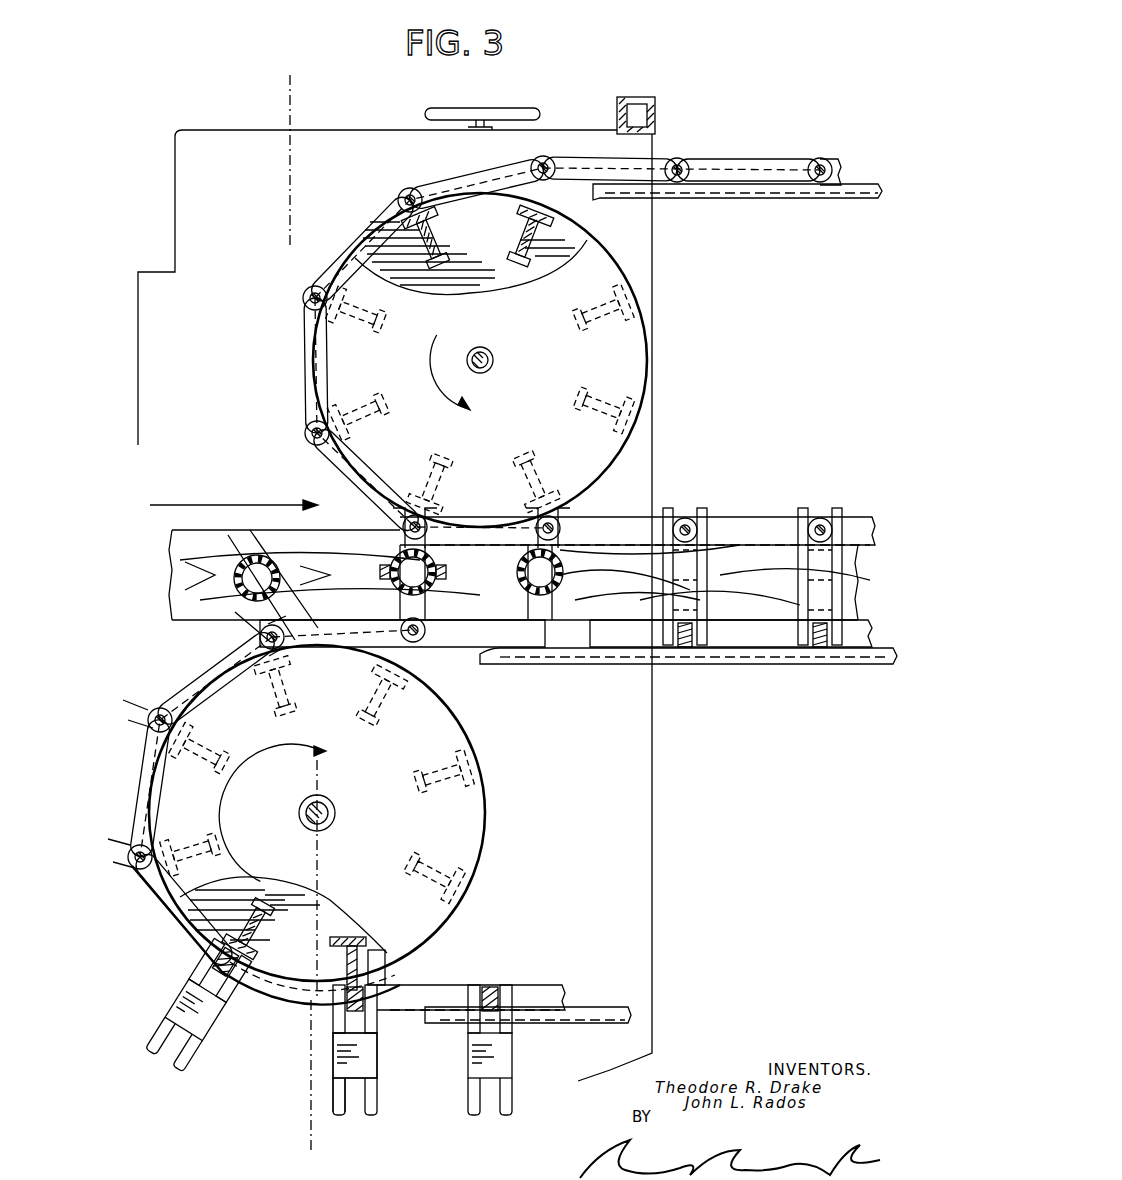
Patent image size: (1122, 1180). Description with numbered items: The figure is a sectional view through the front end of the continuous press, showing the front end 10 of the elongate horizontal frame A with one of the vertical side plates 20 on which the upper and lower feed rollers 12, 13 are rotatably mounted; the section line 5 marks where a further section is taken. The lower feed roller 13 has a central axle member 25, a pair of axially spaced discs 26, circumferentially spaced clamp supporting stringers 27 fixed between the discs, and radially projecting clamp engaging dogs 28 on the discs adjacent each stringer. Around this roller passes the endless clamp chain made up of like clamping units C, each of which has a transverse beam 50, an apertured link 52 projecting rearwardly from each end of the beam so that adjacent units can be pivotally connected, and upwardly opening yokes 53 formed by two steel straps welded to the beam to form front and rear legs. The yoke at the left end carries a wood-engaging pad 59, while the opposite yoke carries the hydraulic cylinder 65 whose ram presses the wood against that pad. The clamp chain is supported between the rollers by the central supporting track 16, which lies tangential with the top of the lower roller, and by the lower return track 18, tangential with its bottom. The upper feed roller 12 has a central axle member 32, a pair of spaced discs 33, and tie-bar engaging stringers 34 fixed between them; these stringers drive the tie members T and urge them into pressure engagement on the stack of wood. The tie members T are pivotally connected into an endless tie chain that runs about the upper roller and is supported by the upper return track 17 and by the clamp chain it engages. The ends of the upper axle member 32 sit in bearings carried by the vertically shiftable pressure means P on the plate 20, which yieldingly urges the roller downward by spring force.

The front end 10 is at (165, 153).
The plate 20 is at (632, 806).
The section line 5- 5 is at (343, 1135).
The pressure means P is at (480, 106).
The frame A is at (660, 112).
The tie member T is at (826, 158).
The upper return track 17 is at (746, 198).
The upper feed roller 12 is at (633, 357).
The axle member 32 is at (493, 362).
The disc 33 is at (627, 335).
The tie-bar engaging stringer 34 is at (625, 410).
The cylinder 65 is at (282, 566).
The central supporting track 16 is at (752, 660).
The lower feed roller 13 is at (472, 818).
The axle member 25 is at (333, 814).
The disc 26 is at (425, 716).
The clamp supporting stringer 27 is at (352, 936).
The clamp engaging dog 28 is at (483, 756).
The beam 50 is at (345, 993).
The clamping unit C is at (508, 978).
The link 52 is at (442, 986).
The lower return track 18 is at (605, 1006).
The wood-engaging pad 59 is at (378, 1048).
The yoke 53 is at (378, 1080).